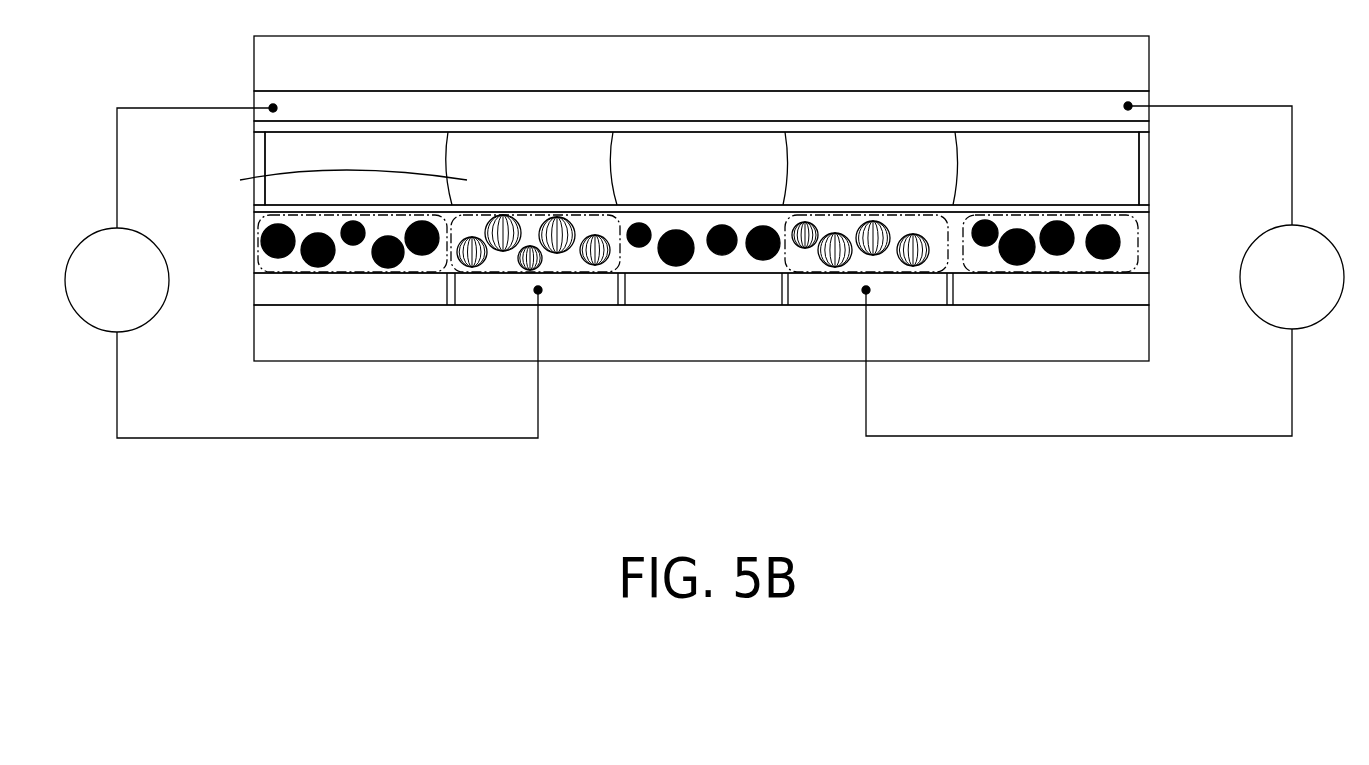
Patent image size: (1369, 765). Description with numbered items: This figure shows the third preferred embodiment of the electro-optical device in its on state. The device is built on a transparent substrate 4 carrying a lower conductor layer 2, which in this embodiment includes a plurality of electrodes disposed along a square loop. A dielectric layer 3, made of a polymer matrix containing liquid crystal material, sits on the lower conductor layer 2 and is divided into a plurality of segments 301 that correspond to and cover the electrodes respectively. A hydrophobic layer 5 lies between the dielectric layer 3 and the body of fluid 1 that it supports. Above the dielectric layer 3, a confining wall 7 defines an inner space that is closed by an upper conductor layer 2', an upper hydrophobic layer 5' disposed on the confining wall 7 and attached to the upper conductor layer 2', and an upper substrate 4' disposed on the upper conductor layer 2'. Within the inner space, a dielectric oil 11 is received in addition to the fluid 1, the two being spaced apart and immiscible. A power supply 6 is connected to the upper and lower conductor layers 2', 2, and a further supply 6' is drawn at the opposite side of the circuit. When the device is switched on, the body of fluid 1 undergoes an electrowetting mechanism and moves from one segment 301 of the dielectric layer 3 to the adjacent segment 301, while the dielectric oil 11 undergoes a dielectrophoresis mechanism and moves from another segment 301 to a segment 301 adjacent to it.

The body of fluid 1 is at (947, 172).
The lower conductor layer 2 is at (669, 299).
The upper conductor layer 2' is at (758, 89).
The dielectric layer 3 is at (1143, 252).
The segments of the dielectric layer 301 is at (1072, 385).
The transparent substrate 4 is at (744, 337).
The upper substrate 4' is at (745, 61).
The hydrophobic layer 5 is at (659, 215).
The upper hydrophobic layer 5' is at (744, 144).
The power supply 6 is at (1115, 269).
The DEP voltage source 6' is at (288, 271).
The confining wall 7 is at (258, 148).
The dielectric oil 11 is at (240, 180).